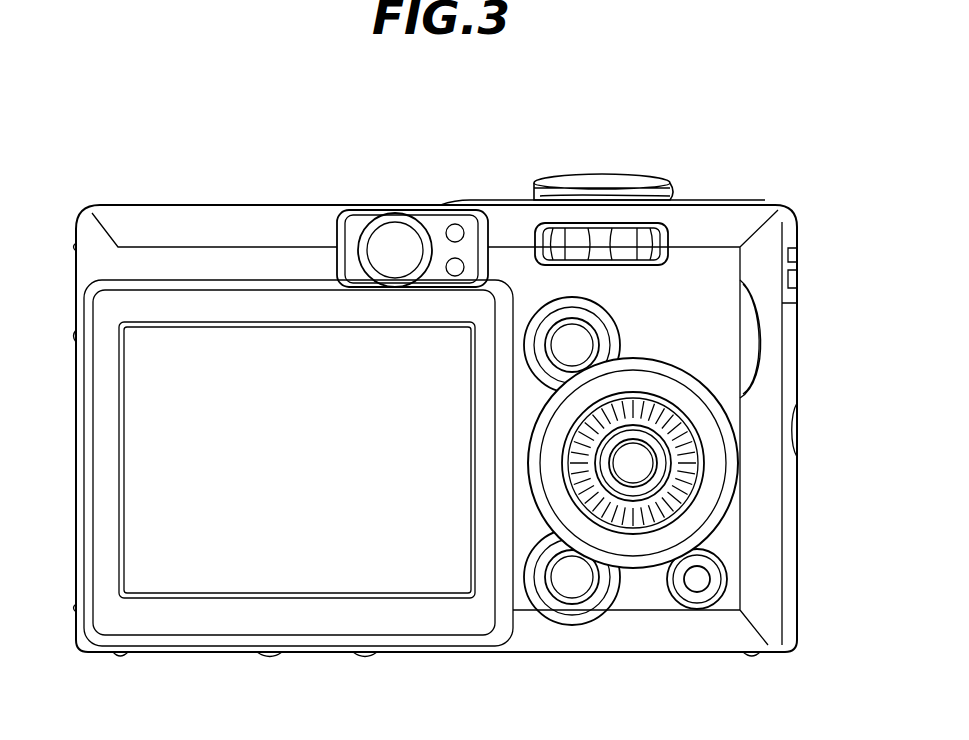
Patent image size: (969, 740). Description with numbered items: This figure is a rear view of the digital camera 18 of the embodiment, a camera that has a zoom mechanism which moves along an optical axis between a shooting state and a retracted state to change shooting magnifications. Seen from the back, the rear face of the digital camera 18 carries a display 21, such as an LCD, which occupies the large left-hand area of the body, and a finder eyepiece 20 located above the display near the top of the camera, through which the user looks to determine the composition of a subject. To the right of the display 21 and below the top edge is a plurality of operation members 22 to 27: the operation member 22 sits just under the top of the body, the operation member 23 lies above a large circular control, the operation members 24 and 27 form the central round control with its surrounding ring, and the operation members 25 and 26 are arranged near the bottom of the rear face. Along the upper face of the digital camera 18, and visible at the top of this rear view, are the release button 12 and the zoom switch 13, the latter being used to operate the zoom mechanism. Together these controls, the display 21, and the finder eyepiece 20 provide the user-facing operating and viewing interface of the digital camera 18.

The digital camera 18 is at (210, 220).
The finder eyepiece 20 is at (392, 232).
The release button 12 is at (600, 175).
The zoom switch 13 is at (652, 186).
The operation member 22 is at (632, 238).
The operation member 23 is at (582, 343).
The operation member 24 is at (636, 467).
The operation member 27 is at (686, 488).
The display 21 is at (377, 580).
The operation member 25 is at (570, 582).
The operation member 26 is at (697, 582).